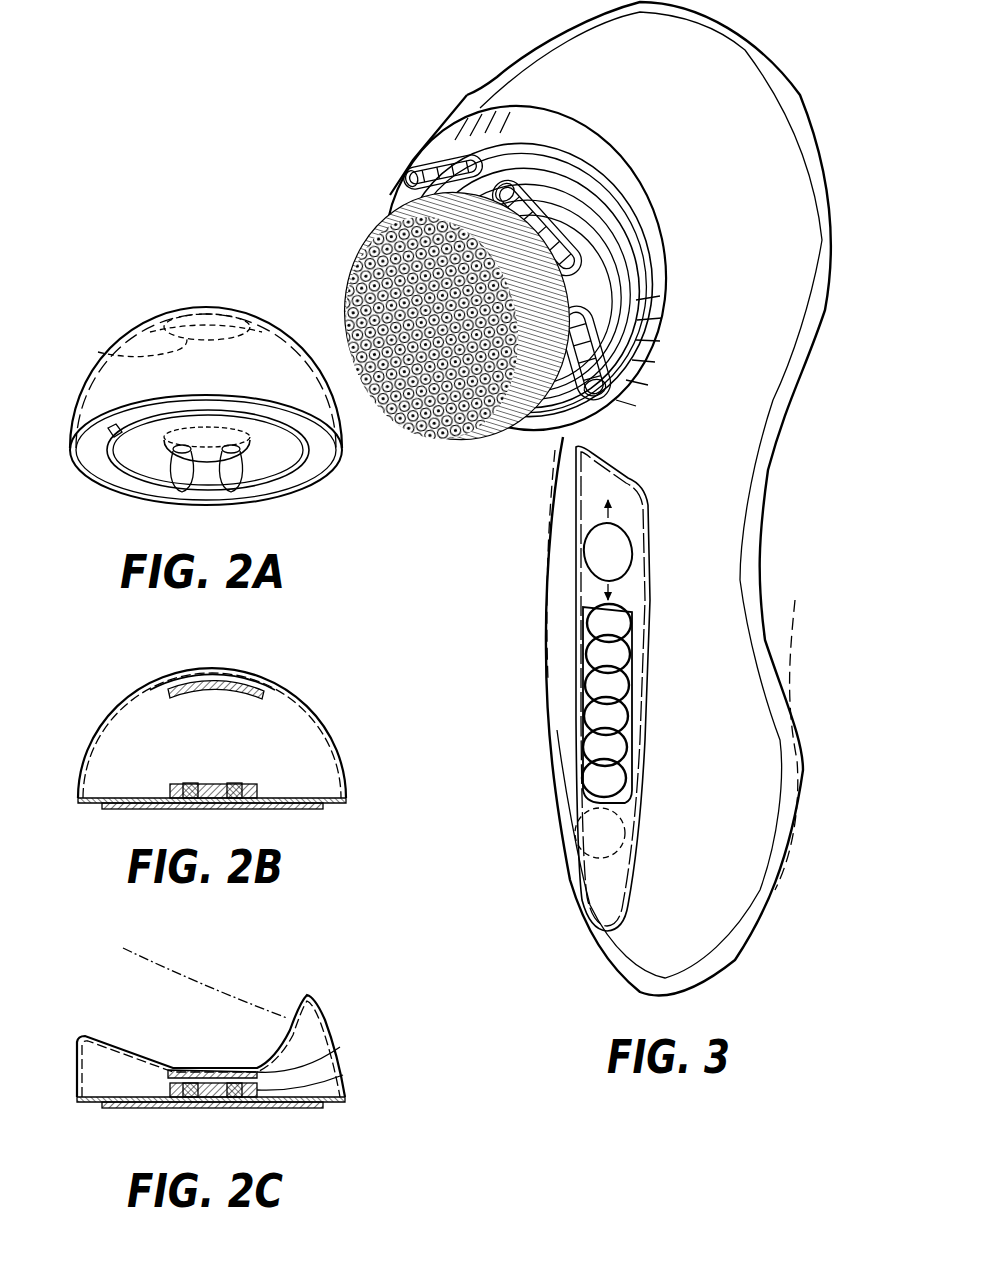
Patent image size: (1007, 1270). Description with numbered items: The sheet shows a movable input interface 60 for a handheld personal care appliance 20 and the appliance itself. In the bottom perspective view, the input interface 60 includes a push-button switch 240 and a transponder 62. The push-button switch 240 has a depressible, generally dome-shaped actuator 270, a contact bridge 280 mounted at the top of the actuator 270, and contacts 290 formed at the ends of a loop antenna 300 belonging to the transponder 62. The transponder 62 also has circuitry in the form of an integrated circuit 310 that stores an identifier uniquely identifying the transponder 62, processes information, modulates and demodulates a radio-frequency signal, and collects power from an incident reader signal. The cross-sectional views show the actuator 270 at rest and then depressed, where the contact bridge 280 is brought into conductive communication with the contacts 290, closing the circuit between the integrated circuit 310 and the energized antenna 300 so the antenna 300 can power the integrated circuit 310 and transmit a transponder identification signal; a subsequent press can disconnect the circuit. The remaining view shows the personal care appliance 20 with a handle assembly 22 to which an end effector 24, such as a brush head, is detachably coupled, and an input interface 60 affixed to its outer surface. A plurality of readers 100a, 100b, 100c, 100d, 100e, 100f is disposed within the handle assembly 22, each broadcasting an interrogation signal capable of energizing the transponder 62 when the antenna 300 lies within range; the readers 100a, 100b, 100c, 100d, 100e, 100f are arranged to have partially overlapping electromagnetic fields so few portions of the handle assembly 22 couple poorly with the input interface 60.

In FIG. 3, the personal care appliance 20 is at (773, 38).
In FIG. 3, the handle assembly 22 is at (751, 612).
In FIG. 3, the end effector 24 is at (378, 214).
In FIG. 2A, the input interface 60 is at (306, 296).
In FIG. 2B, the input interface 60 is at (106, 699).
In FIG. 2C, the input interface 60 is at (331, 992).
In FIG. 3, the input interface 60 is at (583, 521).
In FIG. 2A, the transponder 62 is at (156, 452).
In FIG. 2B, the transponder 62 is at (210, 776).
In FIG. 2C, the transponder 62 is at (343, 1075).
In FIG. 3, the reader 100a is at (589, 610).
In FIG. 3, the reader 100b is at (582, 630).
In FIG. 3, the reader 100c is at (582, 662).
In FIG. 3, the reader 100d is at (582, 696).
In FIG. 3, the reader 100e is at (582, 729).
In FIG. 3, the reader 100f is at (582, 762).
In FIG. 2A, the push-button switch 240 is at (214, 290).
In FIG. 2B, the push-button switch 240 is at (249, 662).
In FIG. 2A, the domed-shape actuator 270 is at (97, 364).
In FIG. 2B, the domed-shape actuator 270 is at (315, 707).
In FIG. 2C, the domed-shape actuator 270 is at (330, 1002).
In FIG. 2A, the contact bridge 280 is at (98, 351).
In FIG. 2B, the contact bridge 280 is at (266, 689).
In FIG. 2C, the contact bridge 280 is at (340, 1048).
In FIG. 2A, the contacts 290 is at (176, 456).
In FIG. 2B, the contacts 290 is at (189, 783).
In FIG. 2C, the contacts 290 is at (185, 1098).
In FIG. 2A, the antenna 300 is at (305, 470).
In FIG. 2B, the antenna 300 is at (323, 806).
In FIG. 2C, the antenna 300 is at (323, 1105).
In FIG. 2A, the integrated circuit 310 is at (110, 437).